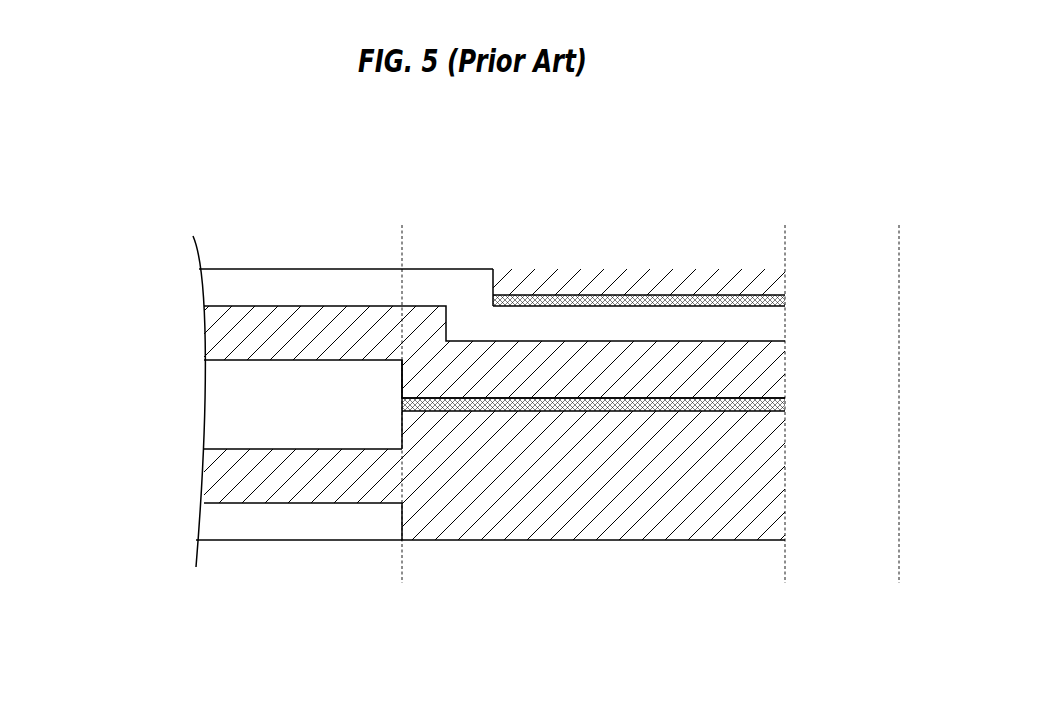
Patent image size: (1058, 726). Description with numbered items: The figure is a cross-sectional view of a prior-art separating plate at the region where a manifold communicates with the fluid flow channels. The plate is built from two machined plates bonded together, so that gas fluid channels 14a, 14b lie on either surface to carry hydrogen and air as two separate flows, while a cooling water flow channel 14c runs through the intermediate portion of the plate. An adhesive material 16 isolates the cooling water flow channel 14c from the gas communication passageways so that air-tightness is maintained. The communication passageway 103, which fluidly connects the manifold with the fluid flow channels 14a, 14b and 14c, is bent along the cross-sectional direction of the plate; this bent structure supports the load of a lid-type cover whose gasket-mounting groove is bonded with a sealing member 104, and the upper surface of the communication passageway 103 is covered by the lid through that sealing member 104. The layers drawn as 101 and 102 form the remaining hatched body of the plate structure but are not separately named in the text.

The gas fluid channel 14a is at (293, 528).
The gas fluid channel 14b is at (285, 282).
The cooling water flow channel 14c is at (217, 410).
The adhesive material 16 is at (463, 397).
The substrate 101 is at (587, 527).
The insulating layer 102 is at (615, 370).
The communication passageway 103 is at (542, 323).
The sealing member 104 is at (733, 306).